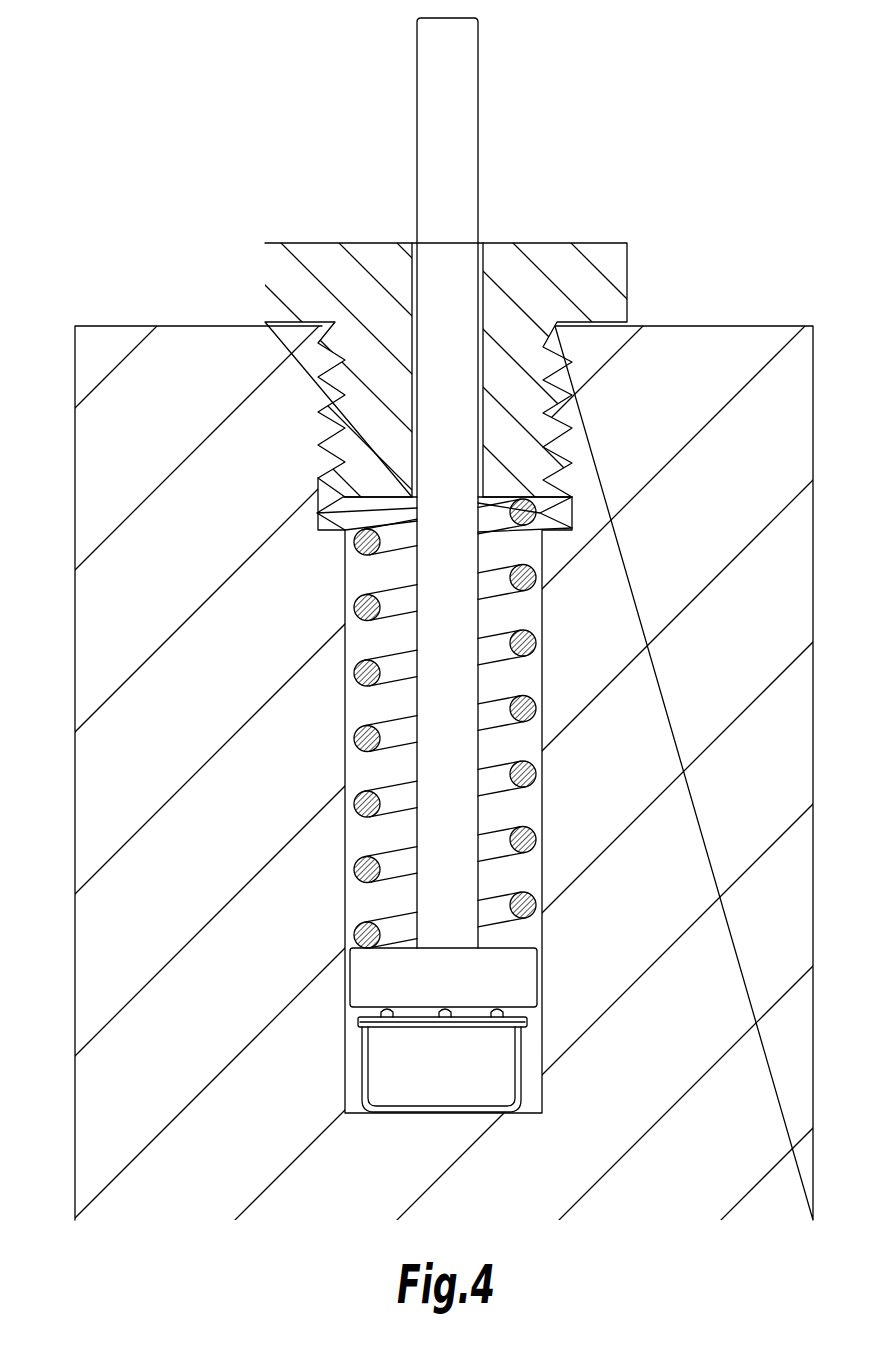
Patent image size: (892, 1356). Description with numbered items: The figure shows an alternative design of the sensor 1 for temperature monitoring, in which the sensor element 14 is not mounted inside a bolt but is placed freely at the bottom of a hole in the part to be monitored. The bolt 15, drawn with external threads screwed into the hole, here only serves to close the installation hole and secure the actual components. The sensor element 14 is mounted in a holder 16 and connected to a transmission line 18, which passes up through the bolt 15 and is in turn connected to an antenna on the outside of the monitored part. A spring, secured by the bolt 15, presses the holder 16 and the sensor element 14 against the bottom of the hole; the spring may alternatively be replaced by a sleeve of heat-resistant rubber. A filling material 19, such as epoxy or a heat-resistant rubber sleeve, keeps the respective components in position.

The sensor 1 is at (769, 144).
The sensor element 14 is at (437, 1097).
The bolt 15 is at (595, 285).
The holder 16 is at (512, 975).
The transmission line 18 is at (455, 167).
The material 19 is at (545, 638).